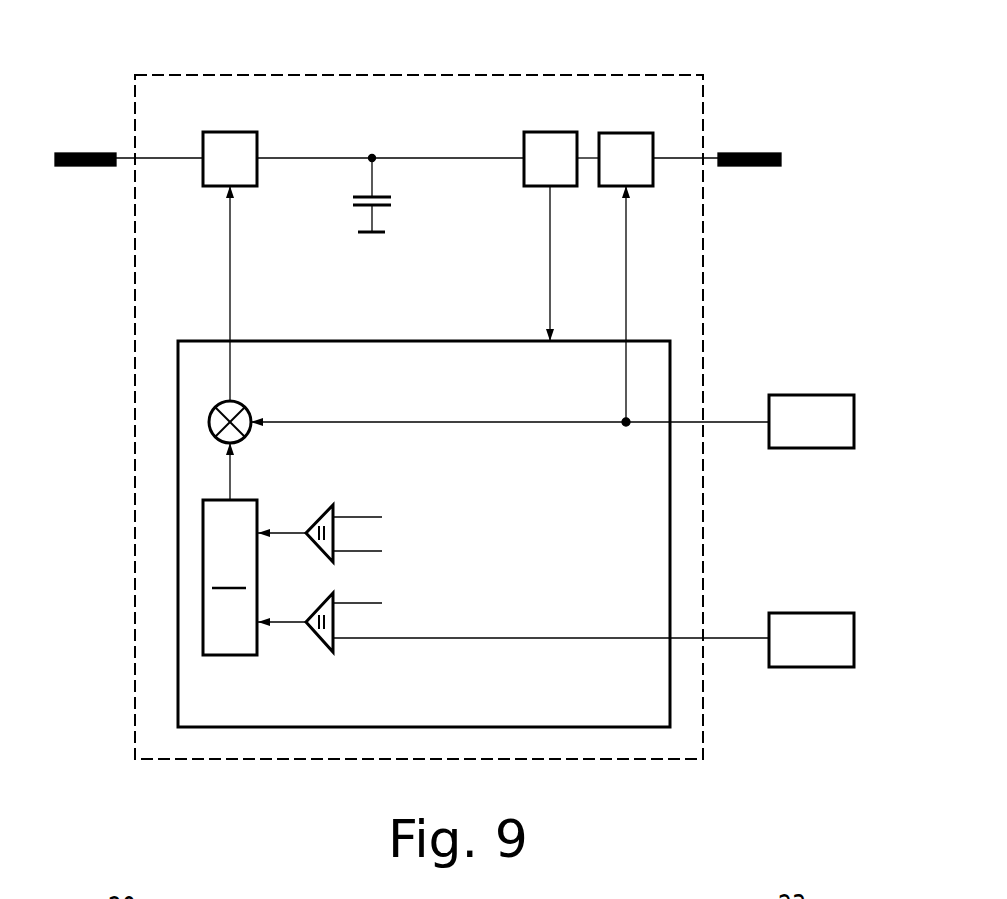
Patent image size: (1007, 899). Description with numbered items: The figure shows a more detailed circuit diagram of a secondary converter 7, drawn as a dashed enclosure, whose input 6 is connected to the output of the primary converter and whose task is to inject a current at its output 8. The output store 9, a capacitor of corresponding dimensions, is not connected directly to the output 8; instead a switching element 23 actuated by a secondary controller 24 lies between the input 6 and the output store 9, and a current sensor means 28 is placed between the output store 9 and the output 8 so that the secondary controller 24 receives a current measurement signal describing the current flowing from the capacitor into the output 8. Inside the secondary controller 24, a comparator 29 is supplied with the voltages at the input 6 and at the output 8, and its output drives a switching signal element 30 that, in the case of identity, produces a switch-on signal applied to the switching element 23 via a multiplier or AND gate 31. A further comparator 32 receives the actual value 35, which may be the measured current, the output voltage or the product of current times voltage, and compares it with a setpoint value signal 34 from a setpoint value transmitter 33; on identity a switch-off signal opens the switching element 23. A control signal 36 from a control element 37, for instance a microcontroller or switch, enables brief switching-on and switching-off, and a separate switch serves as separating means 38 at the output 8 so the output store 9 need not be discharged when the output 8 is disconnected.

The input 6 is at (97, 165).
The secondary converter 7 is at (653, 75).
The output 8 is at (749, 153).
The output store 9 is at (383, 207).
The switching element 23 is at (242, 187).
The secondary controller 24 is at (357, 340).
The current sensor means 28 is at (533, 186).
The comparator 29 is at (318, 518).
The switching signal element 30 is at (230, 577).
The multiplier or AND gate 31 is at (243, 405).
The further comparator 32 is at (320, 637).
The setpoint value transmitter 33 is at (795, 667).
The setpoint value signal 34 is at (731, 640).
The actual value 35 is at (360, 603).
The control signal 36 is at (724, 422).
The control element 37 is at (793, 448).
The separating means 38 is at (640, 186).